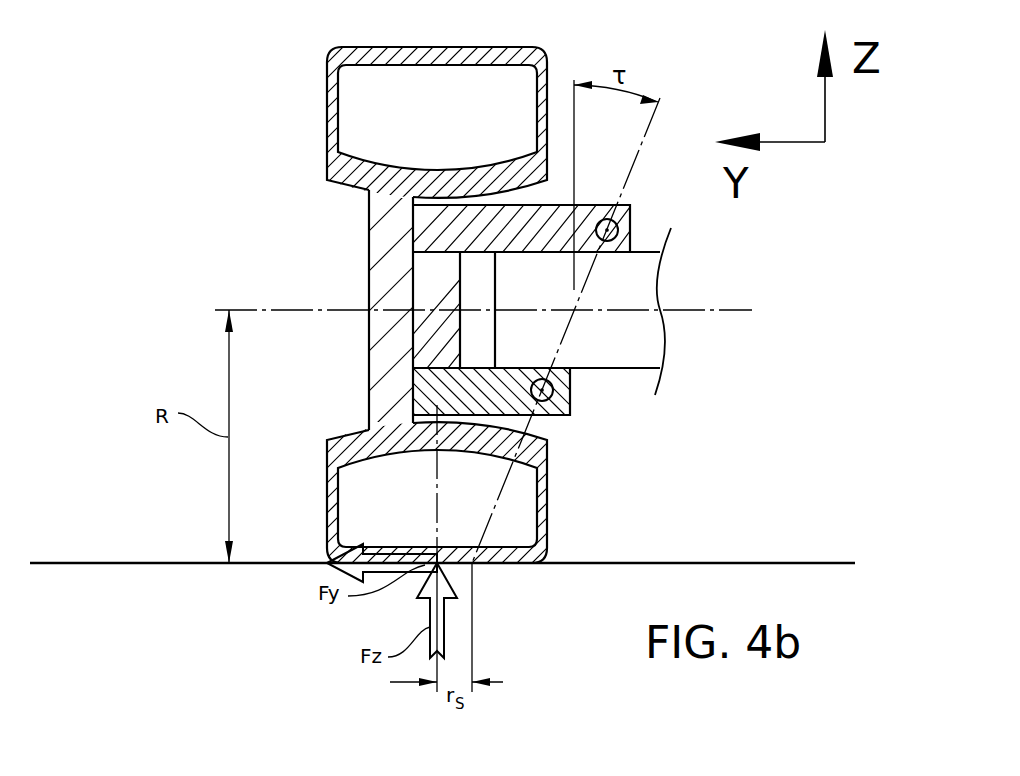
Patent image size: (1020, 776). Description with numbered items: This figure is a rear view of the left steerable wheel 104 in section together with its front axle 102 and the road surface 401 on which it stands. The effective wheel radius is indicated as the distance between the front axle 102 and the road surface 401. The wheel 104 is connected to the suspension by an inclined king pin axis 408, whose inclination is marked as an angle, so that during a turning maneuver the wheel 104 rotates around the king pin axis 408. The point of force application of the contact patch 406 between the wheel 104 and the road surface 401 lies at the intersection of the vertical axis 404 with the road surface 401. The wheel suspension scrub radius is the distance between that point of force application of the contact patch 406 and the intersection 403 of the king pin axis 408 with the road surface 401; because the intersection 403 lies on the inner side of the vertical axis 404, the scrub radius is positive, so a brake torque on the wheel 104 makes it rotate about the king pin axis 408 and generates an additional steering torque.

The front axle 102 is at (630, 338).
The left steerable wheel 104 is at (548, 527).
The road surface 401 is at (168, 565).
The intersection between the king pin axis and the road surface 403 is at (477, 567).
The vertical axis 404 is at (437, 515).
The contact patch 406 is at (430, 570).
The king pin axis 408 is at (507, 482).